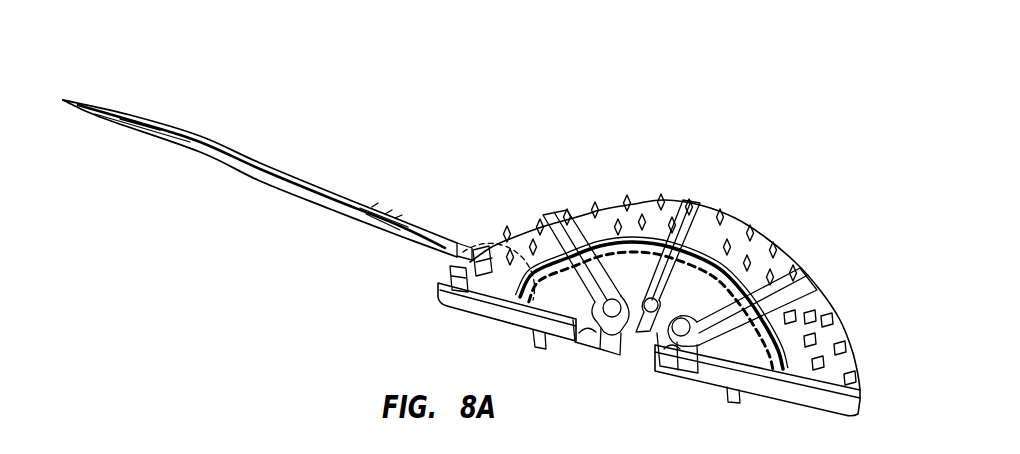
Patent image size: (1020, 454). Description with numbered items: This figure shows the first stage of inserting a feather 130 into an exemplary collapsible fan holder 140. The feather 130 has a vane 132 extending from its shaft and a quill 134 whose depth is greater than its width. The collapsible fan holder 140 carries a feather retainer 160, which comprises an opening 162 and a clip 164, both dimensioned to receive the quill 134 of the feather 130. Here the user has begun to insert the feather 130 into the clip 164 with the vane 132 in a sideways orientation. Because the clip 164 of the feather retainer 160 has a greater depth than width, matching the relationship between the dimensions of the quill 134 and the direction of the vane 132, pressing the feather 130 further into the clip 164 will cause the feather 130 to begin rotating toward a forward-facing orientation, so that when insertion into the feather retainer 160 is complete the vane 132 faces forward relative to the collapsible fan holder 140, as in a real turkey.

The feather 130 is at (237, 60).
The vane 132 is at (165, 126).
The quill 134 is at (461, 257).
The collapsible fan holder 140 is at (778, 205).
The feather retainer 160 is at (450, 263).
The opening 162 is at (535, 312).
The clip 164 is at (466, 247).